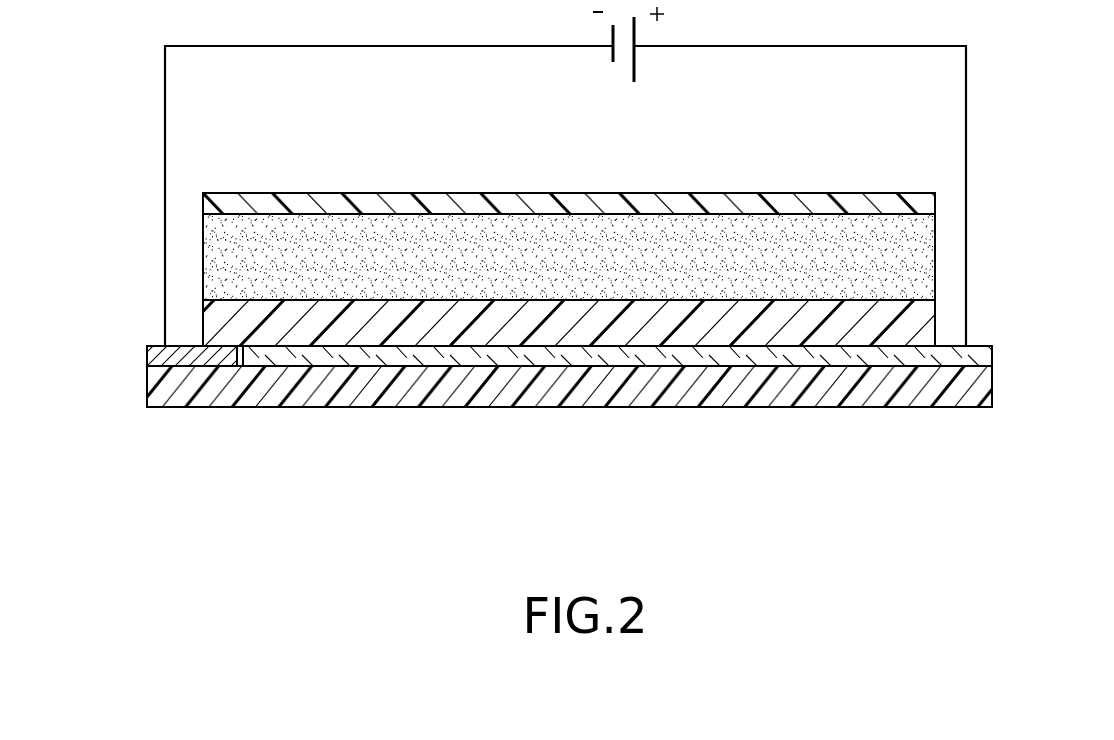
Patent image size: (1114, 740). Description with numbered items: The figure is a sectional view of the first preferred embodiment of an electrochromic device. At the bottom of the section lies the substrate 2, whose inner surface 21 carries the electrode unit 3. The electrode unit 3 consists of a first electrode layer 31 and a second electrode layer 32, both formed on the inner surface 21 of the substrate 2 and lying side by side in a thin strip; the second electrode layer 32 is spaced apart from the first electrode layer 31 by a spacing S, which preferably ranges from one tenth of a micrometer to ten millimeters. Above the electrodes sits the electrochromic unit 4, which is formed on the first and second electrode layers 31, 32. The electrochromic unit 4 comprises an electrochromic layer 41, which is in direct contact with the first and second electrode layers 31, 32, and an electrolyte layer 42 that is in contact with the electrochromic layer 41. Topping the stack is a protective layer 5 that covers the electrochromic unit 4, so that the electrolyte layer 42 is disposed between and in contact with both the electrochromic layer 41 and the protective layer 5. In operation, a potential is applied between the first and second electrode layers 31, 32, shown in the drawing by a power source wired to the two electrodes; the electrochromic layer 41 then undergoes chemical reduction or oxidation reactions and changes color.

The substrate 2 is at (569, 425).
The inner surface 21 is at (693, 367).
The electrode unit 3 is at (569, 388).
The first electrode layer 31 is at (985, 354).
The second electrode layer 32 is at (155, 357).
The spacing S is at (241, 348).
The electrochromic unit 4 is at (557, 224).
The electrochromic layer 41 is at (245, 326).
The electrolyte layer 42 is at (265, 252).
The protective layer 5 is at (853, 207).